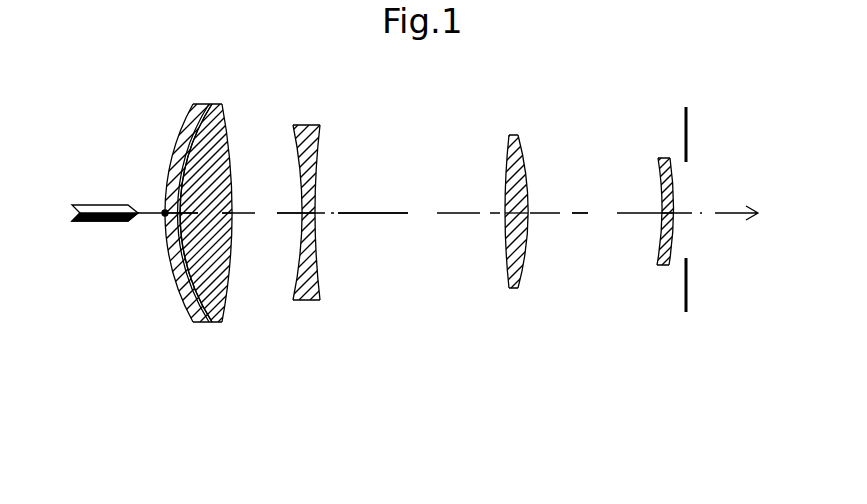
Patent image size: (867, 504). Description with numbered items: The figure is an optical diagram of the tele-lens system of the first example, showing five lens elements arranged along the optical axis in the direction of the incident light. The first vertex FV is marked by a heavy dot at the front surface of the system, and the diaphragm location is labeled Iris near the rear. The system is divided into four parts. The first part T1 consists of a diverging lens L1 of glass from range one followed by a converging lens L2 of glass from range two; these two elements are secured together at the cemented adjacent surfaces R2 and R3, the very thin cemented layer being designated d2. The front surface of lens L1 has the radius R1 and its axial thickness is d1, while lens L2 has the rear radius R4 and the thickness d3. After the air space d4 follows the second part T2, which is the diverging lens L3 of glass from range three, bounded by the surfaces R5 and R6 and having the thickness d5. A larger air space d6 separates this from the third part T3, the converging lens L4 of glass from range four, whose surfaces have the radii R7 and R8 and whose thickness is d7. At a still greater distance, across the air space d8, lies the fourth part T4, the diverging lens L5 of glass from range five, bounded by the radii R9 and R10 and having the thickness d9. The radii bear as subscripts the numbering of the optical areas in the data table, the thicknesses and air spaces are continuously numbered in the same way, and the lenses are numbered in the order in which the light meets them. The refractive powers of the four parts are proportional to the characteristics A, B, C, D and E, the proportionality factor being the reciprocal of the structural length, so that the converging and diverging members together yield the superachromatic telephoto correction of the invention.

The first vertex FV is at (163, 211).
The first radius R1 is at (182, 129).
The second radius R2 is at (206, 104).
The third radius R3 is at (216, 104).
The fourth radius R4 is at (231, 128).
The fifth radius R5 is at (295, 138).
The sixth radius R6 is at (320, 135).
The seventh radius R7 is at (508, 150).
The eighth radius R8 is at (524, 148).
The ninth radius R9 is at (657, 170).
The tenth radius R10 is at (672, 168).
The first lens thickness d1 is at (169, 193).
The cemented thickness d2 is at (168, 226).
The second lens thickness d3 is at (215, 216).
The first air space d4 is at (278, 216).
The third lens thickness d5 is at (313, 197).
The second air space d6 is at (389, 216).
The fourth lens thickness d7 is at (518, 190).
The third air space d8 is at (596, 216).
The fifth lens thickness d9 is at (670, 195).
The first lens element L1 is at (209, 242).
The second lens element L2 is at (222, 242).
The third lens element L3 is at (304, 242).
The fourth lens element L4 is at (516, 258).
The fifth lens element L5 is at (666, 271).
The first part T1 is at (222, 278).
The second part T2 is at (304, 278).
The third part T3 is at (516, 294).
The fourth part T4 is at (666, 307).
The diaphragm Iris is at (683, 303).